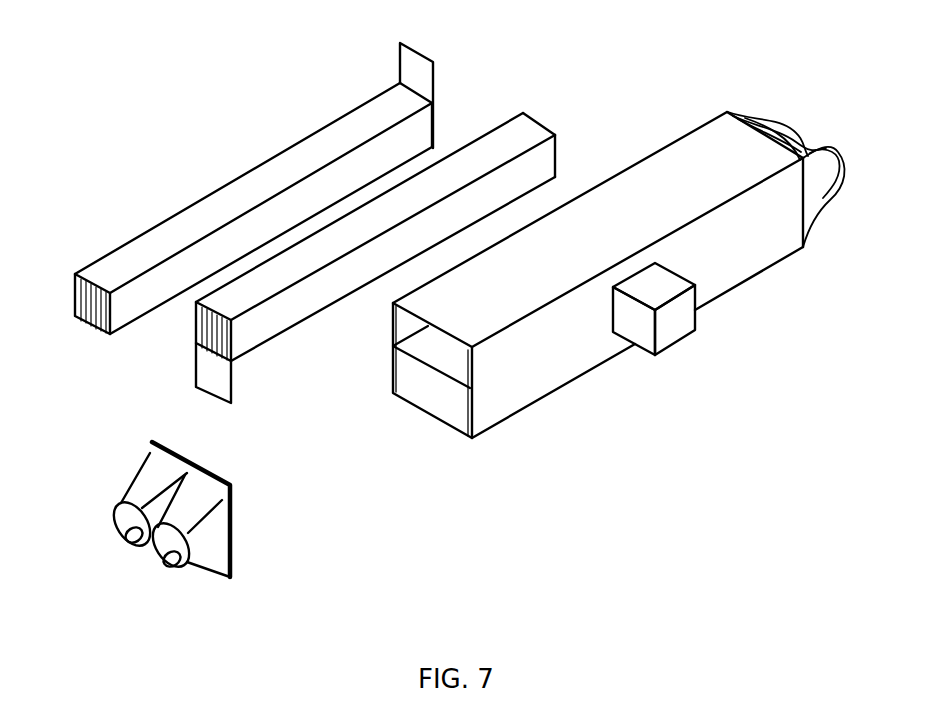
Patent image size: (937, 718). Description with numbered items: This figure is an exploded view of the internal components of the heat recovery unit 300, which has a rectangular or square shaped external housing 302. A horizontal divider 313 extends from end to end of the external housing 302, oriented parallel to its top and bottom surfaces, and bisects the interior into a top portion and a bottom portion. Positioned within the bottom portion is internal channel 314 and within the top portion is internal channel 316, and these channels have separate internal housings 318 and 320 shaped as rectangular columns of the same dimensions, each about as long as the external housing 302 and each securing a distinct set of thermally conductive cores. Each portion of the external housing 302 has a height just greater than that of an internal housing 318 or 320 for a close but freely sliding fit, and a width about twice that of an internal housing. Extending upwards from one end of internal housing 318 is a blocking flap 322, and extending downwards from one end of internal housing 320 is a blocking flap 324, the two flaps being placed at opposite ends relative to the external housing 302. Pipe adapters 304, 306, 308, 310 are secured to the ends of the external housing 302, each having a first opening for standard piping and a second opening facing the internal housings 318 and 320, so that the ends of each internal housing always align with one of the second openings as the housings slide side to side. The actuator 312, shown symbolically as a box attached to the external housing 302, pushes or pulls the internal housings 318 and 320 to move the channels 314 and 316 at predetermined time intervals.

The heat recovery unit 300 is at (222, 66).
The external housing 302 is at (641, 176).
The pipe adapter 304 is at (147, 478).
The pipe adapter 306 is at (195, 553).
The pipe adapter 308 is at (792, 132).
The pipe adapter 310 is at (832, 170).
The actuator 312 is at (677, 332).
The horizontal divider 313 is at (447, 365).
The internal channel 314 is at (86, 322).
The internal channel 316 is at (232, 357).
The internal housing 318 is at (267, 186).
The internal housing 320 is at (496, 150).
The blocking flap 322 is at (412, 70).
The blocking flap 324 is at (205, 372).